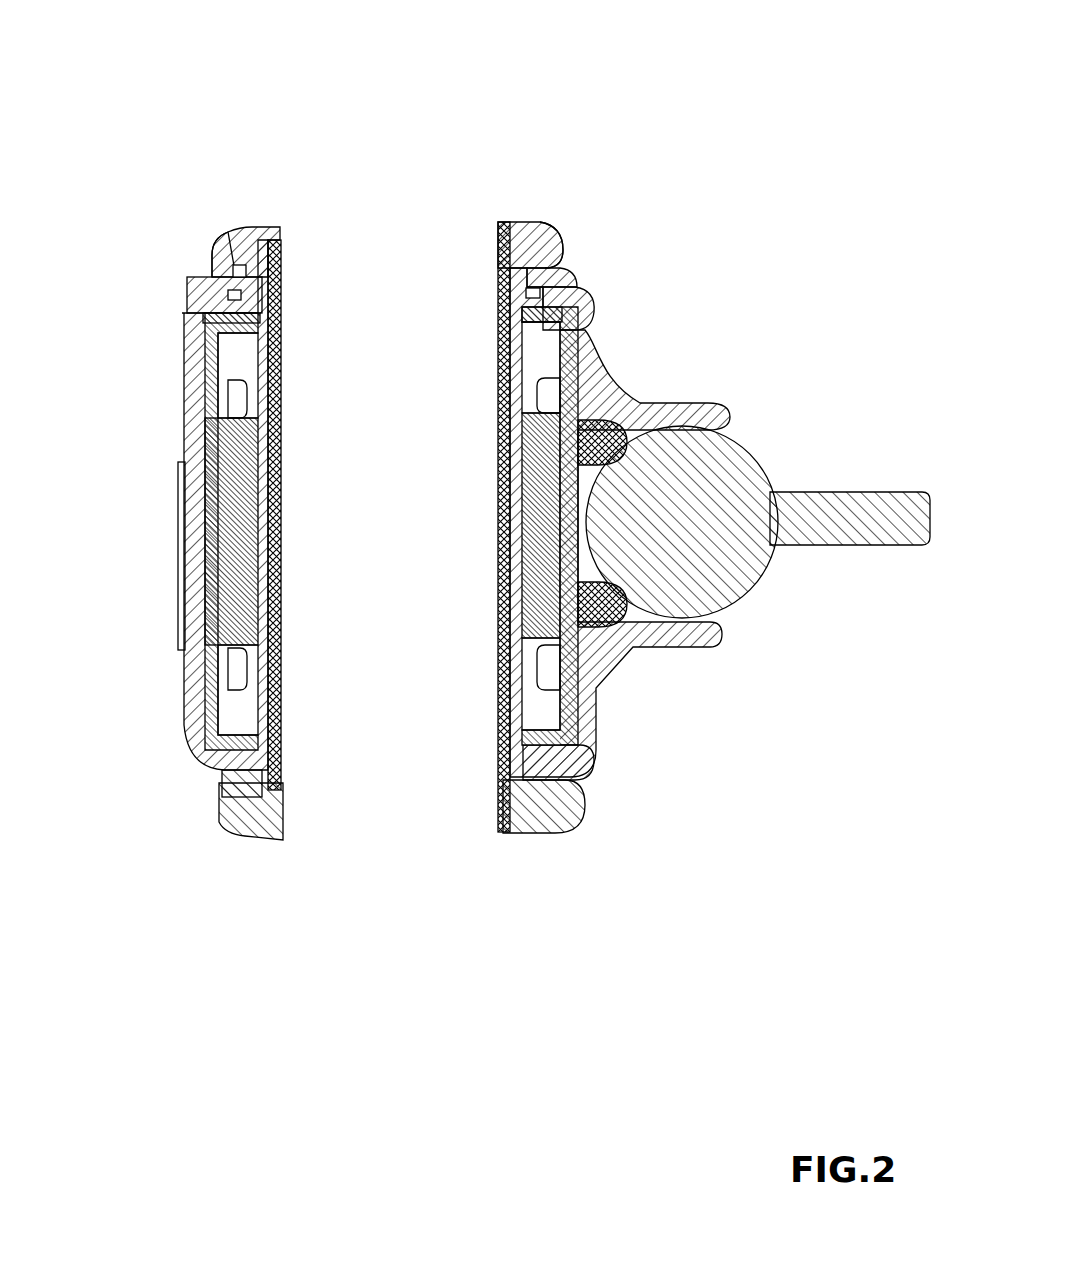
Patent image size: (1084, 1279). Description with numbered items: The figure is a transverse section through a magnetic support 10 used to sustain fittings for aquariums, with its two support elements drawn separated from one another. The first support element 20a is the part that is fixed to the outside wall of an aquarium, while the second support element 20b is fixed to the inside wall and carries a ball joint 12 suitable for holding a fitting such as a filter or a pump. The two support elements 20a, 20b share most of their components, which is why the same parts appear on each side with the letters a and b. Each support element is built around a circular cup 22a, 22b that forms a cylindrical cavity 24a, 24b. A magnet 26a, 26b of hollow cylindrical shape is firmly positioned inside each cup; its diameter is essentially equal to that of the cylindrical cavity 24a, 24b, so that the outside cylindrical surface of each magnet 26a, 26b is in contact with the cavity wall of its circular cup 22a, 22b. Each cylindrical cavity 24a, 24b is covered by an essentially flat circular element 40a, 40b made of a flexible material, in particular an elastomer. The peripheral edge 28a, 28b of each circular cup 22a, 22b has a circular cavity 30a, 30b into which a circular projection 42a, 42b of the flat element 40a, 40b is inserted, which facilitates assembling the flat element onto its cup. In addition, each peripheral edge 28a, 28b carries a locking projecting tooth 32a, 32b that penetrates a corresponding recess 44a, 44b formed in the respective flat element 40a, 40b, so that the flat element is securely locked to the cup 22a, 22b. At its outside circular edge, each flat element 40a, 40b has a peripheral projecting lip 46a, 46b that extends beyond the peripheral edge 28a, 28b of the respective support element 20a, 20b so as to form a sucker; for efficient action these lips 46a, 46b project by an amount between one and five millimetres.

The magnetic support 10 is at (770, 146).
The ball joint 12 is at (733, 618).
The first support element 20a is at (213, 797).
The second support element 20b is at (618, 708).
The circular cup 22a is at (185, 573).
The circular cup 22b is at (618, 660).
The cylindrical cavity 24a is at (205, 520).
The cylindrical cavity 24b is at (543, 547).
The magnet 26a is at (245, 355).
The magnet 26b is at (540, 358).
The peripheral edge 28a is at (188, 285).
The peripheral edge 28b is at (582, 303).
The circular cavity 30a is at (227, 310).
The circular cavity 30b is at (543, 303).
The locking projecting tooth 32a is at (220, 272).
The locking projecting tooth 32b is at (530, 287).
The circular element 40a is at (287, 567).
The circular element 40b is at (503, 473).
The circular projection 42a is at (233, 307).
The circular projection 42b is at (530, 297).
The recess 44a is at (240, 262).
The recess 44b is at (523, 270).
The peripheral projecting lip 46a is at (277, 227).
The peripheral projecting lip 46b is at (520, 232).